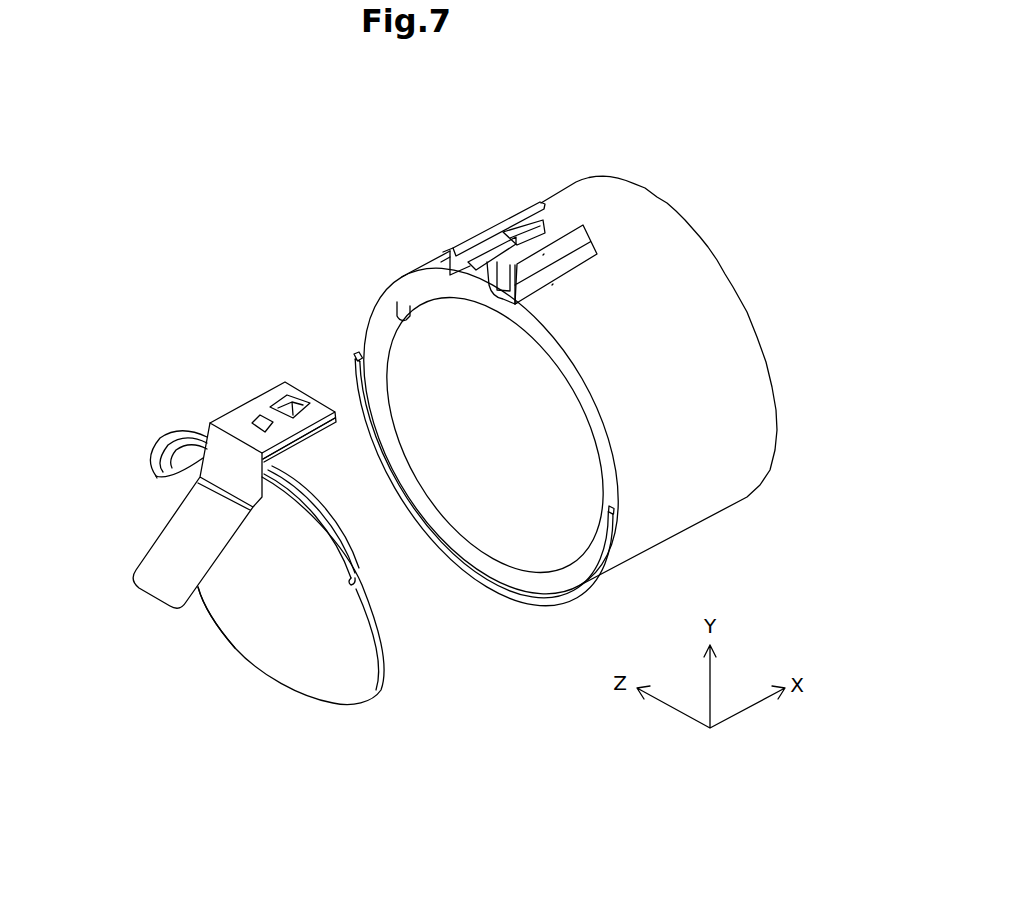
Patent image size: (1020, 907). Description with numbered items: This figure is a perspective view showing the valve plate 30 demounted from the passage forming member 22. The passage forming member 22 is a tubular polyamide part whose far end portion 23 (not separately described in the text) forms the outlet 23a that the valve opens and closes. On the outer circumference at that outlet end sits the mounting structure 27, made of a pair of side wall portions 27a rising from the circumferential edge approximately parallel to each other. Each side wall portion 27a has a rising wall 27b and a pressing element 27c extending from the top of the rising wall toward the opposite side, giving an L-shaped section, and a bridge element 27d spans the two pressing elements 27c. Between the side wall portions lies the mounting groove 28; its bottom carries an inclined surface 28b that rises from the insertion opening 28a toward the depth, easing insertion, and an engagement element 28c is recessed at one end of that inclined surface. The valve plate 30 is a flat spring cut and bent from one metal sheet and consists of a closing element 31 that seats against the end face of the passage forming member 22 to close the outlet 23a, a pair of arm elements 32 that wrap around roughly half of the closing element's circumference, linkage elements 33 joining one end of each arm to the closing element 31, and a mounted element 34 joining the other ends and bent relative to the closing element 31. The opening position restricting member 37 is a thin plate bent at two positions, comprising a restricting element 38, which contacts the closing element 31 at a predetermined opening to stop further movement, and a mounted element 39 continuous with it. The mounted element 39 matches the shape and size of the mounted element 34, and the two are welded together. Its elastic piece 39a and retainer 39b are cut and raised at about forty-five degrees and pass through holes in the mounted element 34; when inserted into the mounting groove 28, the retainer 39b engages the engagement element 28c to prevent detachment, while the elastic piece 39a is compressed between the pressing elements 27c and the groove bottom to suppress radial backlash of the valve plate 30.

The passage forming member 22 is at (584, 200).
The ring 23 is at (484, 479).
The outlet 23a is at (398, 311).
The mounting structure 27 is at (469, 207).
The side wall portions 27a is at (450, 252).
The rising wall 27b is at (447, 250).
The pressing element 27c is at (505, 222).
The bridge element 27d is at (532, 203).
The mounting groove 28 is at (616, 299).
The insertion opening 28a is at (517, 303).
The inclined surface 28b is at (552, 285).
The engagement element 28c is at (543, 255).
The valve plate 30 is at (381, 689).
The closing element 31 is at (267, 623).
The arm elements 32 is at (187, 427).
The linkage elements 33 is at (156, 478).
The mounted element 34 is at (317, 433).
The opening position restricting member 37 is at (218, 475).
The restricting element 38 is at (200, 587).
The mounted element 39 is at (258, 389).
The elastic piece 39a is at (252, 423).
The retainer 39b is at (290, 397).